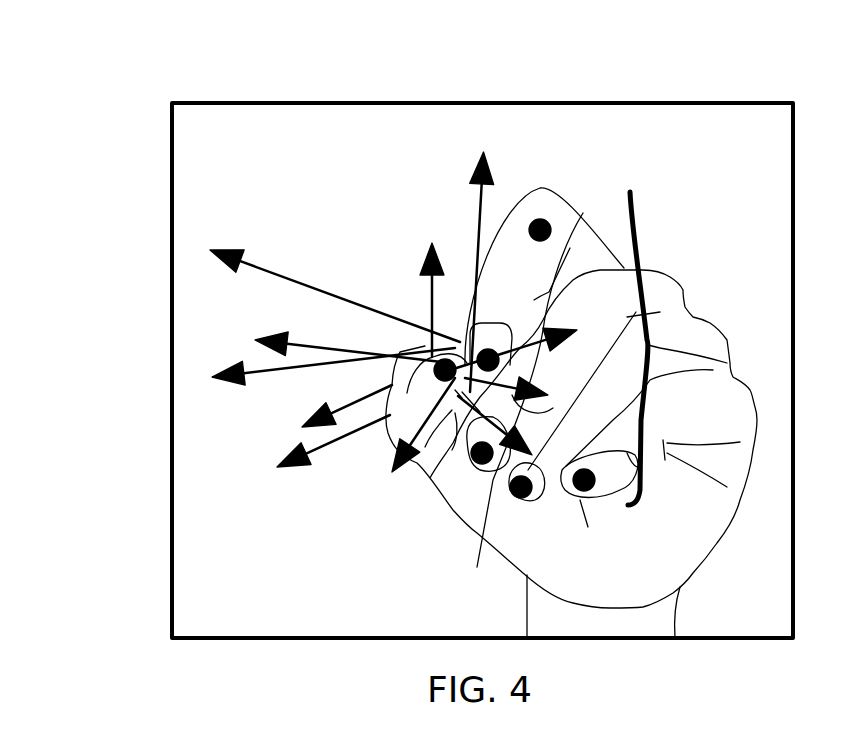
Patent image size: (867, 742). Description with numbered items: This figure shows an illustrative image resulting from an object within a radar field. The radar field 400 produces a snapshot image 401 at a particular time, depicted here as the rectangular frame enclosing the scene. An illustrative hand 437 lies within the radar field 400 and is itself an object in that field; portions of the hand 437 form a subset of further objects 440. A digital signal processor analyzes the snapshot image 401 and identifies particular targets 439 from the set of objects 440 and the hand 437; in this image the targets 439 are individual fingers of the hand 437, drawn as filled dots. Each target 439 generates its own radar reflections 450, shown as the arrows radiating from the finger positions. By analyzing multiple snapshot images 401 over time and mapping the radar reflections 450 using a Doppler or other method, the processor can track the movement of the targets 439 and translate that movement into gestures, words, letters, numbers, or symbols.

The radar field 400 is at (142, 80).
The snapshot image 401 is at (553, 102).
The hand 437 is at (717, 543).
The targets 439 is at (452, 358).
The objects 440 is at (727, 363).
The radar reflections 450 is at (482, 203).